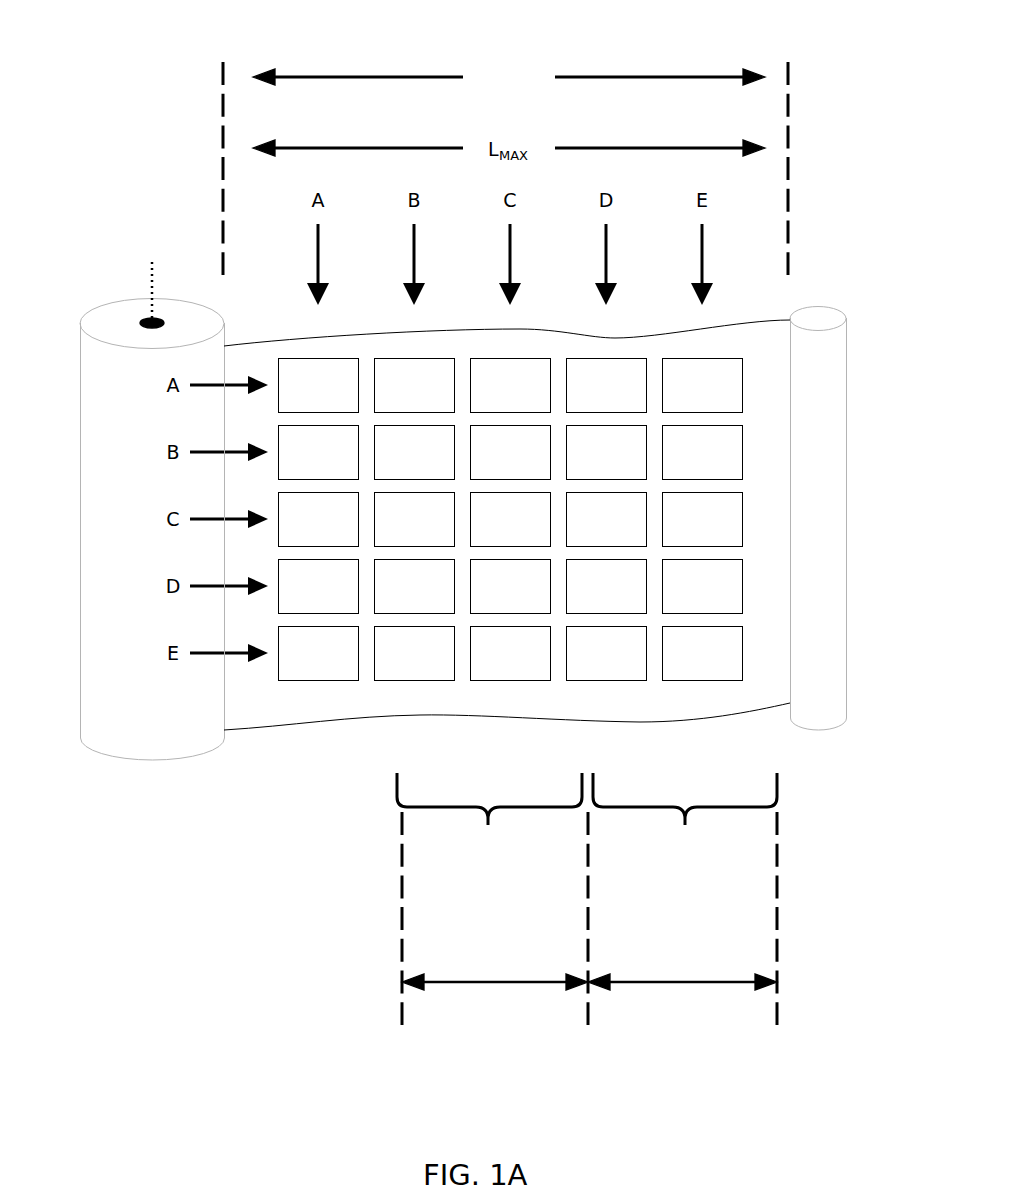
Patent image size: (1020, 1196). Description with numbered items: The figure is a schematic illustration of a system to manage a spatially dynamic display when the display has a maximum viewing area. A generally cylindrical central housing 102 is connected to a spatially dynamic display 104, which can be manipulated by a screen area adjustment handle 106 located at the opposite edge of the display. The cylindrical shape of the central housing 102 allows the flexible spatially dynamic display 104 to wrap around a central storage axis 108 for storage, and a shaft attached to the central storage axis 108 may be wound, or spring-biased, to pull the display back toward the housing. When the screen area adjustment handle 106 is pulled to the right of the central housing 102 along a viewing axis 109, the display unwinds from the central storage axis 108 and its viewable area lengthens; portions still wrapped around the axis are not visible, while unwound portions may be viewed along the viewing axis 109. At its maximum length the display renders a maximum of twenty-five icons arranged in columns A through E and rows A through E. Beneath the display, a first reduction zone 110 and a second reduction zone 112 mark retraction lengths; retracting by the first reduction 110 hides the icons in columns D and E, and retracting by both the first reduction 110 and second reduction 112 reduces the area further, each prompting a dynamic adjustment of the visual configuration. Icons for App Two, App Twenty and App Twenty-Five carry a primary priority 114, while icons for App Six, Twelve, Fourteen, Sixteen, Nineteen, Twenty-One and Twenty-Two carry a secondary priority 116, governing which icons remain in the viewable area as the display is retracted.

The central housing 102 is at (131, 499).
The spatially dynamic display 104 is at (507, 534).
The screen area adjustment handle 106 is at (846, 533).
The central storage axis 108 is at (112, 261).
The viewing axis 109 is at (509, 59).
The first reduction zone 110 is at (682, 900).
The second reduction zone 112 is at (492, 900).
The primary priority 114 is at (379, 609).
The secondary priority 116 is at (512, 575).